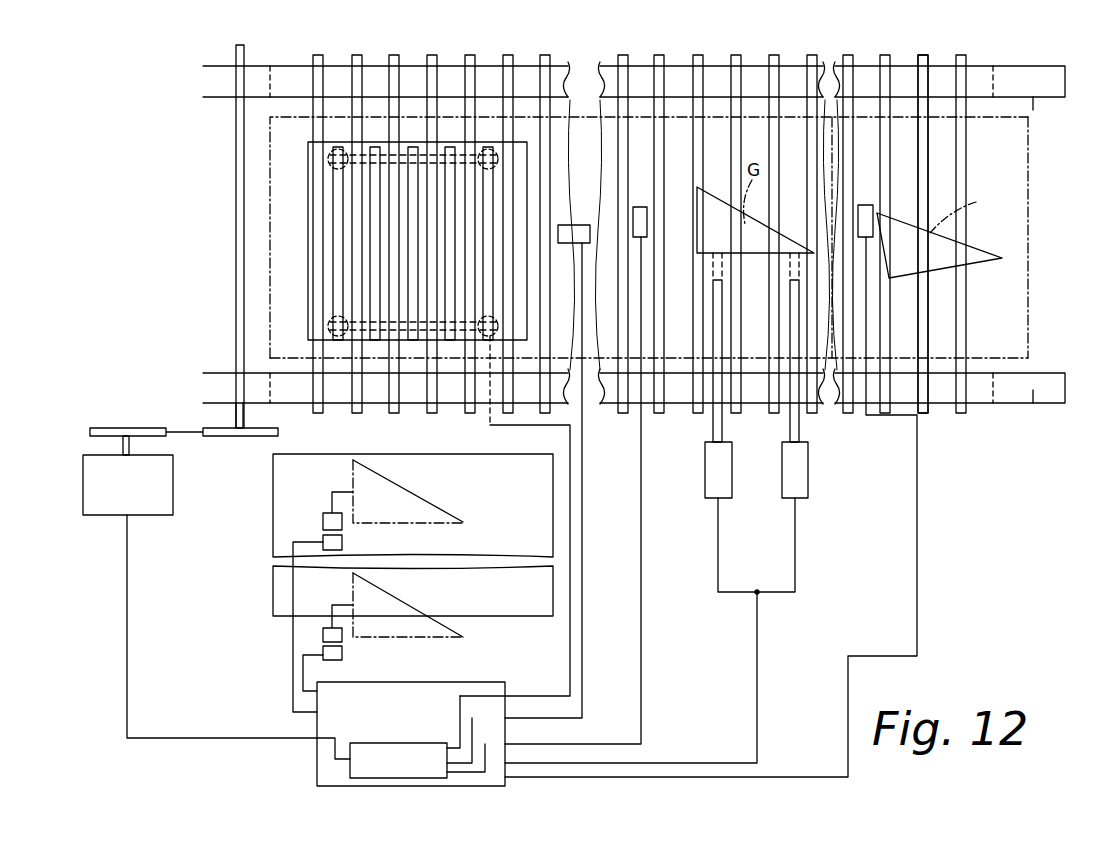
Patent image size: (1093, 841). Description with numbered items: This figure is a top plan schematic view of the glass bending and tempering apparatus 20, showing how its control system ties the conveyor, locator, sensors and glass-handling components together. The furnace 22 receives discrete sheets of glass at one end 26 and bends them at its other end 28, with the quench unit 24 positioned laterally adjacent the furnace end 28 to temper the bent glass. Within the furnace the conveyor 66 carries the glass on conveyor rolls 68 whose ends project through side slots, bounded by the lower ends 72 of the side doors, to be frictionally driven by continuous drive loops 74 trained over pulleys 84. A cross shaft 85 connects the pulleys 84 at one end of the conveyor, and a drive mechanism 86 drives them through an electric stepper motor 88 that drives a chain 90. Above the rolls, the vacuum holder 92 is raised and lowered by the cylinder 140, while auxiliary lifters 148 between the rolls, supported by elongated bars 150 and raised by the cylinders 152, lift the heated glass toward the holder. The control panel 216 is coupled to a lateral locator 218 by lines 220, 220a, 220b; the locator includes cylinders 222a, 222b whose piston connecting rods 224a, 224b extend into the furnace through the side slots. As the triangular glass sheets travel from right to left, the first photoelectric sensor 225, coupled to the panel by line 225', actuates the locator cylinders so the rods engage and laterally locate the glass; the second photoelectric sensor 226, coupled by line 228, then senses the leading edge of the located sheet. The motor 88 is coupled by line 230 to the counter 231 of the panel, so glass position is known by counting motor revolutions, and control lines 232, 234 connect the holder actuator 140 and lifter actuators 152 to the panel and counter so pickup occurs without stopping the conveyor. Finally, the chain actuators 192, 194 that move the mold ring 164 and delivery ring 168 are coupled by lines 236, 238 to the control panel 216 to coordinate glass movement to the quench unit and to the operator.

The glass bending and tempering apparatus 20 is at (830, 570).
The furnace 22 is at (600, 115).
The quench unit 24 is at (273, 578).
The one end of the furnace 26 is at (1030, 152).
The other end of the furnace 28 is at (325, 115).
The conveyor 66 is at (664, 83).
The conveyor rolls 68 is at (925, 298).
The lower ends of the side doors 72 is at (400, 73).
The continuous drive loops 74 is at (905, 72).
The pulleys 84 is at (270, 95).
The cross shaft 85 is at (237, 233).
The drive mechanism 86 is at (72, 447).
The electric stepper motor 88 is at (105, 500).
The chain 90 is at (185, 434).
The vacuum holder 92 is at (528, 170).
The cylinder 140 is at (590, 261).
The auxiliary lifters 148 is at (410, 340).
The elongated bars 150 is at (386, 145).
The cylinders 152 is at (490, 147).
The carrier ring 164 is at (423, 500).
The delivery ring 168 is at (410, 606).
The chain actuator 192 is at (325, 513).
The chain actuator 194 is at (342, 652).
The control panel 216 is at (317, 765).
The lateral locator 218 is at (820, 462).
The electrical or hydraulic line 220 is at (757, 700).
The electrical or hydraulic line 220a is at (797, 528).
The electrical or hydraulic line 220b is at (718, 550).
The locator cylinder 222a is at (790, 487).
The locator cylinder 222b is at (712, 480).
The piston connecting rod 224a is at (800, 418).
The piston connecting rod 224b is at (713, 418).
The first photoelectric sensor 225 is at (930, 223).
The line 225' is at (753, 507).
The second photoelectric sensor 226 is at (633, 215).
The line 228 is at (642, 690).
The line 230 is at (125, 657).
The counter 231 is at (350, 778).
The control line 232 is at (583, 650).
The control line 234 is at (335, 346).
The line 236 is at (290, 690).
The line 238 is at (303, 668).